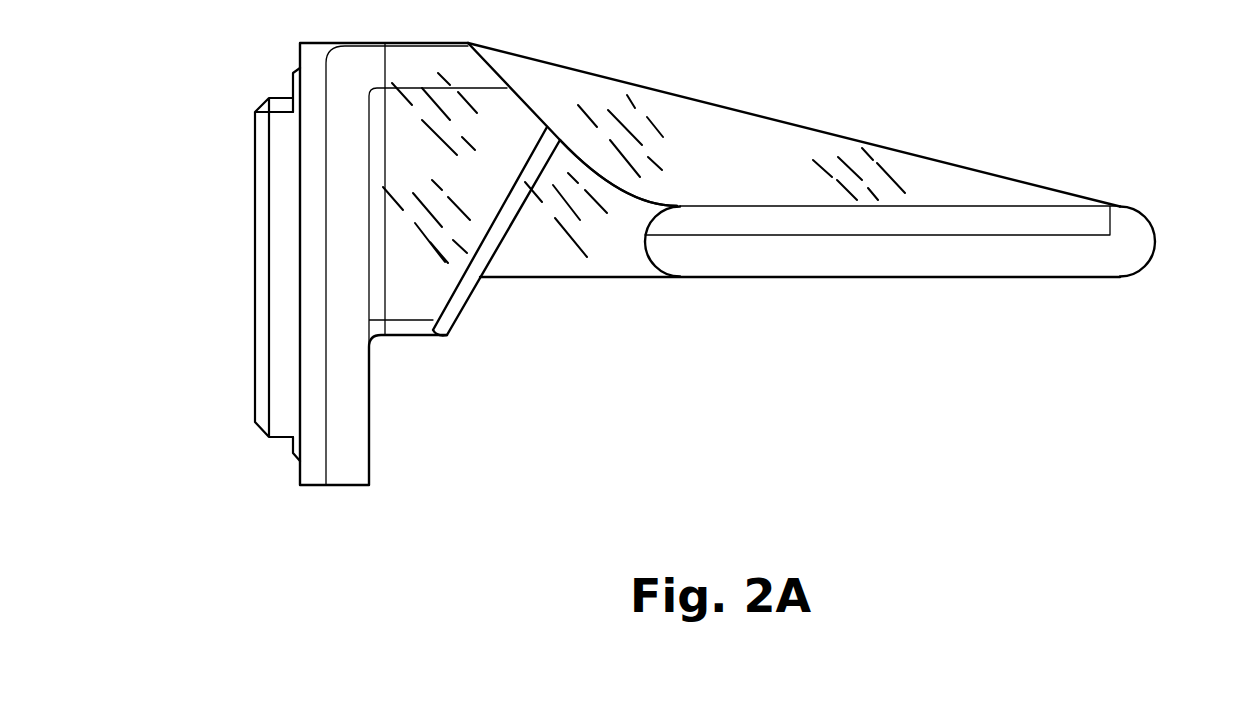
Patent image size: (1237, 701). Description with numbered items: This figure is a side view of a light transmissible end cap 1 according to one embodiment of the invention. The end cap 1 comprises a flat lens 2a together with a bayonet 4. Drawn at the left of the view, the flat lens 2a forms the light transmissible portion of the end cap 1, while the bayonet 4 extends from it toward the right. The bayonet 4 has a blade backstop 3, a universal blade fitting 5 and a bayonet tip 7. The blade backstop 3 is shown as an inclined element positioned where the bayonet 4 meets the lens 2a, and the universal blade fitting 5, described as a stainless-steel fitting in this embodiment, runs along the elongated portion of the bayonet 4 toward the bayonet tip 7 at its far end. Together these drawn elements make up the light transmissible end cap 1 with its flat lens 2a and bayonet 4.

The light transmissible end cap 1 is at (280, 118).
The flat lens 2a is at (348, 395).
The blade backstop 3 is at (465, 290).
The bayonet 4 is at (598, 140).
The universal blade fitting 5 is at (918, 217).
The bayonet tip 7 is at (1157, 248).